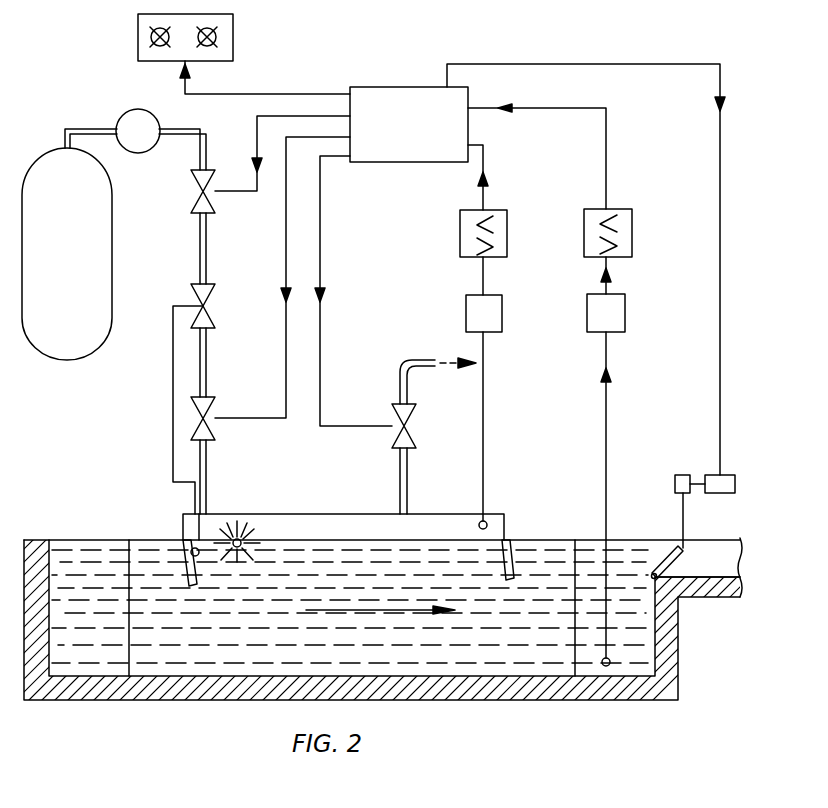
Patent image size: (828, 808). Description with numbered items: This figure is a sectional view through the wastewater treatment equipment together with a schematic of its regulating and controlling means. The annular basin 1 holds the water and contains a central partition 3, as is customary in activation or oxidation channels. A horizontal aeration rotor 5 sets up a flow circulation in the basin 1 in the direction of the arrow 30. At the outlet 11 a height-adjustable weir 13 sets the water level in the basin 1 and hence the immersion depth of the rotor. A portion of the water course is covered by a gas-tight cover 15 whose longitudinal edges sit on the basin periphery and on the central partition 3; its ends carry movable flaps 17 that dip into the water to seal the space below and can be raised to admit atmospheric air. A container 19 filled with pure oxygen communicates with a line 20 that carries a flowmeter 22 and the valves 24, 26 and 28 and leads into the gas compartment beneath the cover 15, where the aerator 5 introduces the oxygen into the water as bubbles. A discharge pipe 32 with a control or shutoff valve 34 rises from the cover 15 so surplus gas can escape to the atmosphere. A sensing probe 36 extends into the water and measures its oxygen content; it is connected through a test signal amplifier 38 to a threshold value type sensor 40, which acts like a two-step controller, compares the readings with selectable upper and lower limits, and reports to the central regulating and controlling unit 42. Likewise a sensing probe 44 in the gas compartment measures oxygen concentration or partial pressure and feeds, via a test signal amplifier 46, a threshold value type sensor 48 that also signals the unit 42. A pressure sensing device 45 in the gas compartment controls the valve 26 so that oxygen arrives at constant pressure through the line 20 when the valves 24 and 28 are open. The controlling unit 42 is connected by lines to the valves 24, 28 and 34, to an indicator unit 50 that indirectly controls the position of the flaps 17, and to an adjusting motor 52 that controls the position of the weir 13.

The annular basin 1 is at (519, 699).
The central partition 3 is at (134, 655).
The aeration rotor 5 is at (226, 556).
The outlet 11 is at (717, 578).
The height-adjustable weir 13 is at (672, 563).
The gas-tight cover 15 is at (300, 514).
The movable flaps 17 is at (190, 572).
The container 19 is at (106, 250).
The line 20 is at (63, 136).
The flowmeter 22 is at (133, 113).
The valve 24 is at (197, 178).
The valve 26 is at (207, 318).
The valve 28 is at (208, 408).
The arrow 30 is at (378, 612).
The discharge pipe 32 is at (407, 494).
The control or shutoff valve 34 is at (410, 433).
The sensing probe 36 is at (612, 657).
The test signal amplifier 38 is at (627, 315).
The threshold value type sensor 40 is at (633, 234).
The central regulating and controlling unit 42 is at (400, 87).
The sensing probe 44 is at (487, 520).
The pressure sensing device 45 is at (198, 556).
The test signal amplifier 46 is at (466, 314).
The threshold value type sensor 48 is at (460, 237).
The indicator unit 50 is at (138, 36).
The adjusting motor 52 is at (719, 493).